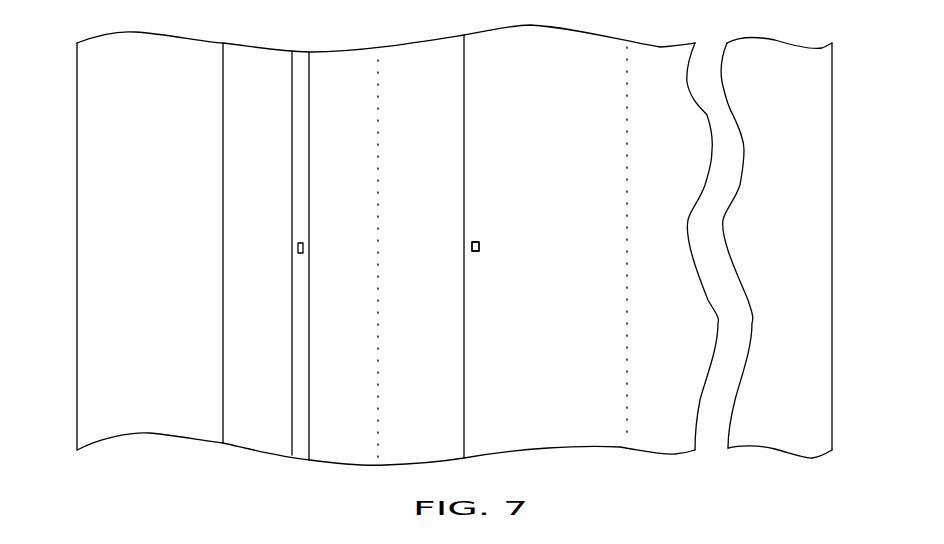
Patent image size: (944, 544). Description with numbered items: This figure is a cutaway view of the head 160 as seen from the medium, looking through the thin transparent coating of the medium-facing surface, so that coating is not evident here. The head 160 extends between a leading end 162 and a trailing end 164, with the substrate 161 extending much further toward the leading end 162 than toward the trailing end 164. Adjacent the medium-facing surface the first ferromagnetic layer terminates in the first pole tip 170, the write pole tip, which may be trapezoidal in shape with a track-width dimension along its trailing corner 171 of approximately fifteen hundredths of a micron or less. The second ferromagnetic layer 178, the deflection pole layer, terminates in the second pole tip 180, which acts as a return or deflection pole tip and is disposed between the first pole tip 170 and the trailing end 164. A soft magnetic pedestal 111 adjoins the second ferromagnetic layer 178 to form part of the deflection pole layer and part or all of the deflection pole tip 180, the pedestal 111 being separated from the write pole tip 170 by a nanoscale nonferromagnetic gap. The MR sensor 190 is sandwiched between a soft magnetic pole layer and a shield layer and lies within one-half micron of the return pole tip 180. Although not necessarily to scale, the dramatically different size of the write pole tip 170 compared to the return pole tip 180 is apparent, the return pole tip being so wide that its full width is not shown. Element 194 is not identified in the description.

The head 160 is at (104, 473).
The trailing end 164 is at (70, 297).
The leading end 162 is at (840, 297).
The boundary line 194 is at (223, 128).
The second ferromagnetic layer 178 is at (309, 383).
The MR sensor 190 is at (298, 248).
The second pole tip 180 is at (383, 261).
The soft magnetic pedestal 111 is at (466, 384).
The first pole tip 170 is at (477, 251).
The trailing corner 171 is at (472, 247).
The substrate 161 is at (620, 130).